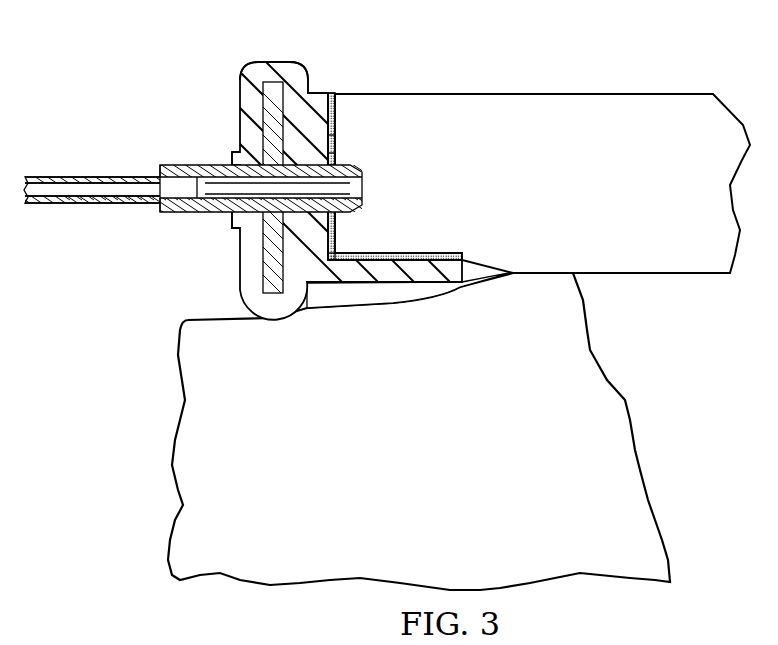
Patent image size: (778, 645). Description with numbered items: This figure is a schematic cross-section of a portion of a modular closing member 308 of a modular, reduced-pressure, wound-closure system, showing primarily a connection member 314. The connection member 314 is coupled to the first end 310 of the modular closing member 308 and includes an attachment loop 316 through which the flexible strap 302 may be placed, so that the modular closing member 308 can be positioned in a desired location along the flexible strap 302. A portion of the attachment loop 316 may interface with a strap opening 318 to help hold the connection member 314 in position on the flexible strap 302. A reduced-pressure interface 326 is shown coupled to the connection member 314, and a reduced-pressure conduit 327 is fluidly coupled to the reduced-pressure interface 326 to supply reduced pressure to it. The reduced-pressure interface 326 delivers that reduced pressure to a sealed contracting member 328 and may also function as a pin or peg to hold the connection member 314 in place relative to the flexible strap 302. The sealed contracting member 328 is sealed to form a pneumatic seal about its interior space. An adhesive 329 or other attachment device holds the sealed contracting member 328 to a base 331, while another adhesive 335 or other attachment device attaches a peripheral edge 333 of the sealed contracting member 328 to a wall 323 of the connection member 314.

The flexible strap 302 is at (270, 275).
The modular closing member 308 is at (540, 93).
The first end 310 is at (334, 108).
The connection member 314 is at (257, 63).
The attachment loop 316 is at (276, 82).
The strap opening 318 is at (270, 108).
The wall 323 is at (310, 94).
The reduced-pressure interface 326 is at (196, 165).
The reduced-pressure conduit 327 is at (70, 177).
The sealed contracting member 328 is at (493, 191).
The adhesive 329 is at (400, 253).
The base 331 is at (390, 283).
The peripheral edge 333 is at (335, 128).
The adhesive 335 is at (335, 145).